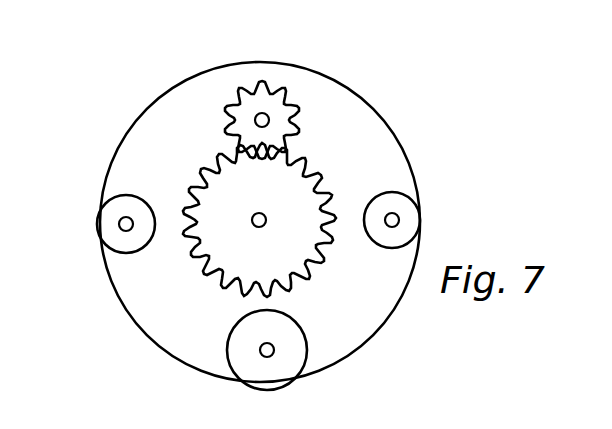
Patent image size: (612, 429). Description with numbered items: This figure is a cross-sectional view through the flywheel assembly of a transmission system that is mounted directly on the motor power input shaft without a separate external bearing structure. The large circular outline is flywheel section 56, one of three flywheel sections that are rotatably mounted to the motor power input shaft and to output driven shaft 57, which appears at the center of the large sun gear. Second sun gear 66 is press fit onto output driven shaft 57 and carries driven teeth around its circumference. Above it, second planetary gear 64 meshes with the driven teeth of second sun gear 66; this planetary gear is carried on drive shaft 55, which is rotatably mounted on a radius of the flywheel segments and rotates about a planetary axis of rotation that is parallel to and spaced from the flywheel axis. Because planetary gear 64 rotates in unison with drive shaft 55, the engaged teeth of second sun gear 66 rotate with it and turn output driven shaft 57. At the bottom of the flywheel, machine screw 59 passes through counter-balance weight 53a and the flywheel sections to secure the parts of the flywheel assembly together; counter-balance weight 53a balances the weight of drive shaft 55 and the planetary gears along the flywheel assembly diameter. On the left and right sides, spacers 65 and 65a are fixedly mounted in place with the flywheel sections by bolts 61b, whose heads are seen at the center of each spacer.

The counter-balance weight 53a is at (293, 363).
The drive shaft 55 is at (259, 113).
The flywheel section 56 is at (180, 118).
The output driven shaft 57 is at (266, 215).
The machine screw 59 is at (274, 347).
The bolts 61b is at (122, 219).
The second planetary gear 64 is at (280, 113).
The spacer 65 is at (113, 230).
The spacer 65a is at (407, 222).
The second sun gear 66 is at (225, 245).